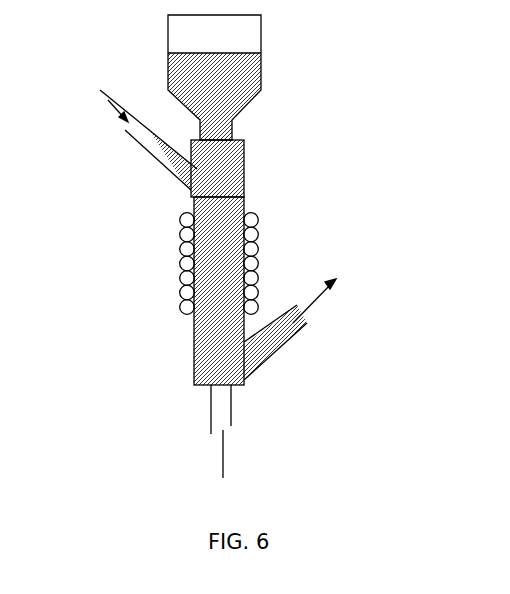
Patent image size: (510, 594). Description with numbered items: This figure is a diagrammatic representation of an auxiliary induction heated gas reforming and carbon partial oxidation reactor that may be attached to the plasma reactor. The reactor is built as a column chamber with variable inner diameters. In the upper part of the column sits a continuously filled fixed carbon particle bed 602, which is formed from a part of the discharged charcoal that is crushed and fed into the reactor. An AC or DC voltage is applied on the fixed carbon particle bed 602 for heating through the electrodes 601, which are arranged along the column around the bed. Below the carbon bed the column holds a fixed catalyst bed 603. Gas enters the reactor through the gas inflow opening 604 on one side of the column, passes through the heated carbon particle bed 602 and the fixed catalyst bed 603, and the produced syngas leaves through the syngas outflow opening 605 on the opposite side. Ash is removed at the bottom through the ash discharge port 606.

The electrodes 601 is at (258, 262).
The fixed carbon particle bed 602 is at (243, 190).
The fixed catalyst bed 603 is at (193, 362).
The gas inflow opening 604 is at (146, 130).
The syngas outflow opening 605 is at (305, 318).
The ash discharge port 606 is at (223, 422).